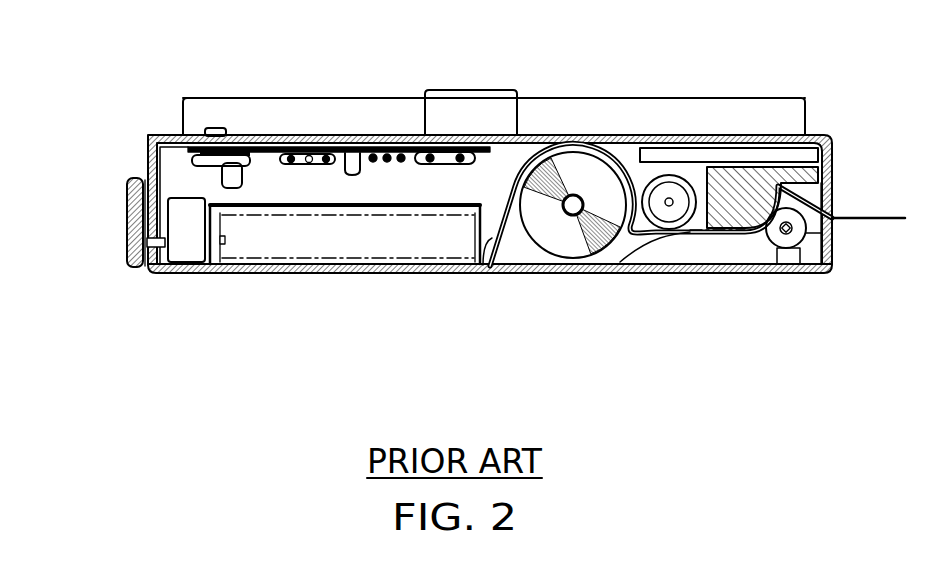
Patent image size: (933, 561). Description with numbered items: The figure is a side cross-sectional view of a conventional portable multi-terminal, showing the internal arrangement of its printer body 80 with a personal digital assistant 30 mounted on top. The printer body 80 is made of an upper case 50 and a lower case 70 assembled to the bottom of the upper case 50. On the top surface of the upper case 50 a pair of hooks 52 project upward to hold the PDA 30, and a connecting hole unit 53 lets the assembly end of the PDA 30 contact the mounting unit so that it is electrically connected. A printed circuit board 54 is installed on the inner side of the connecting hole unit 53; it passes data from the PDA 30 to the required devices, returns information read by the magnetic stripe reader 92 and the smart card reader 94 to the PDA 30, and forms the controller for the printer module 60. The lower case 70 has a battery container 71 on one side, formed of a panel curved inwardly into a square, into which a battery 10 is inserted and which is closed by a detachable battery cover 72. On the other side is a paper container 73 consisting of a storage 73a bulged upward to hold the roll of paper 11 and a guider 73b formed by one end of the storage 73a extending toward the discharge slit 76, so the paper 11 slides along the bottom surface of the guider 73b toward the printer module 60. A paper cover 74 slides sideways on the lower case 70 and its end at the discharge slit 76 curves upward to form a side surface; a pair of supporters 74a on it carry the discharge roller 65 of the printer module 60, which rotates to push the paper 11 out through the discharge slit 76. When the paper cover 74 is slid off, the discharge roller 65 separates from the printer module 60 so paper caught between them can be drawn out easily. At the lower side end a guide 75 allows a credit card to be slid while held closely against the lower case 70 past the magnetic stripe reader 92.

The battery 10 is at (297, 275).
The paper 11 is at (563, 143).
The personal digital assistant (PDA) 30 is at (624, 95).
The upper case 50 is at (140, 197).
The hooks 52 is at (475, 90).
The connecting hole unit 53 is at (217, 128).
The printed circuit board (PCB) 54 is at (308, 154).
The printer module 60 is at (753, 167).
The discharge roller 65 is at (832, 243).
The lower case 70 is at (155, 280).
The battery container 71 is at (487, 268).
The battery cover 72 is at (378, 275).
The paper container 73 is at (601, 265).
The storage 73a is at (507, 243).
The guider 73b is at (685, 234).
The paper cover 74 is at (675, 275).
The supporters 74a is at (765, 262).
The guide 75 is at (137, 180).
The discharge slit 76 is at (834, 216).
The printer body 80 is at (85, 196).
The magnetic stripe reader (MSR) 92 is at (187, 252).
The smart card reader 94 is at (673, 150).